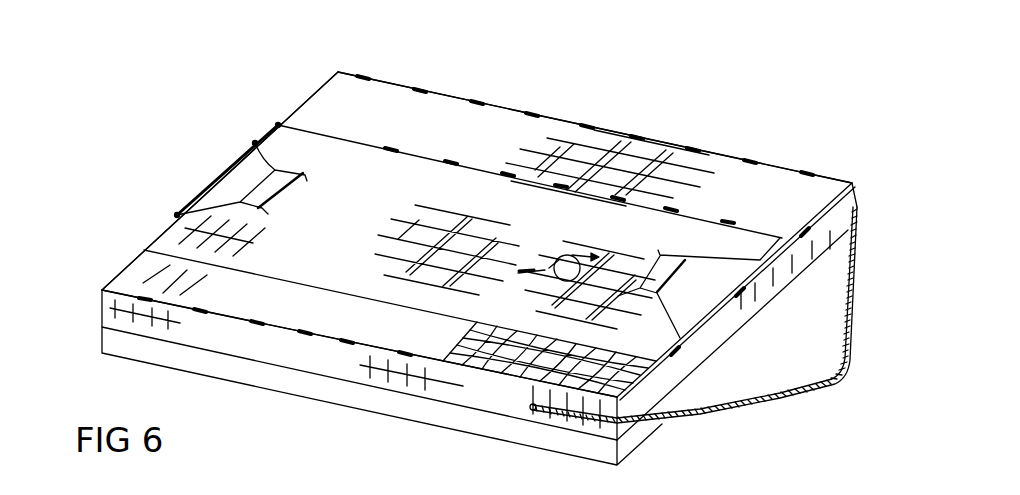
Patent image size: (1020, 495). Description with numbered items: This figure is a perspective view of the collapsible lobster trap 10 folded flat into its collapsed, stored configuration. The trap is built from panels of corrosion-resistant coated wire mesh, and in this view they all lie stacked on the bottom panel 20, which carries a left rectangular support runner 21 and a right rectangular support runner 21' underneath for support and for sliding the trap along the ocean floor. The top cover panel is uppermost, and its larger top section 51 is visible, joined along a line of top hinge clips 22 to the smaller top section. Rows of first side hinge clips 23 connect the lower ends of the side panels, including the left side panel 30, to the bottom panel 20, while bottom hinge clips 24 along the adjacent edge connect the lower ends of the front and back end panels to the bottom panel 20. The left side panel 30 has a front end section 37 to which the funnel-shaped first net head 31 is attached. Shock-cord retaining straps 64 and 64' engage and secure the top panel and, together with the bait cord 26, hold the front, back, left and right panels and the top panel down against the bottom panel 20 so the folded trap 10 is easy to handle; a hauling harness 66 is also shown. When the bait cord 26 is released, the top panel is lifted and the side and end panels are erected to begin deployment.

The collapsible lobster trap 10 is at (254, 70).
The bottom panel 20 is at (104, 322).
The left rectangular support runner 21 is at (397, 397).
The right rectangular support runner 21' is at (737, 311).
The top hinge clips 22 is at (385, 112).
The first side hinge clips 23 is at (483, 100).
The bottom hinge clips 24 is at (680, 352).
The bait cord 26 is at (572, 250).
The left side panel 30 is at (143, 270).
The first net head 31 is at (325, 95).
The front end section 37 is at (520, 367).
The larger top section 51 is at (356, 242).
The shock-cord retaining strap 64 is at (699, 263).
The shock-cord retaining strap 64' is at (242, 177).
The hauling harness 66 is at (833, 385).